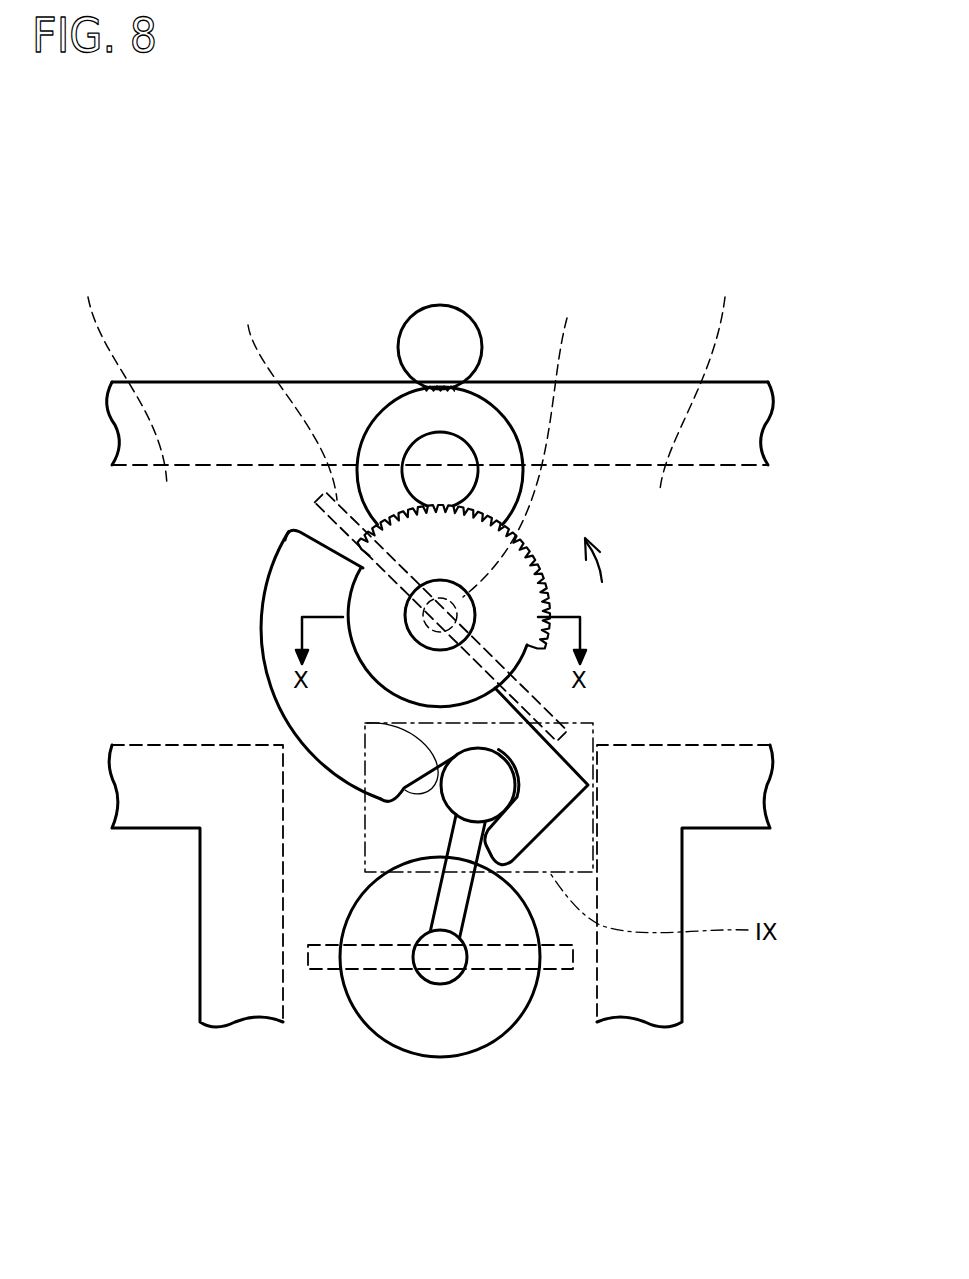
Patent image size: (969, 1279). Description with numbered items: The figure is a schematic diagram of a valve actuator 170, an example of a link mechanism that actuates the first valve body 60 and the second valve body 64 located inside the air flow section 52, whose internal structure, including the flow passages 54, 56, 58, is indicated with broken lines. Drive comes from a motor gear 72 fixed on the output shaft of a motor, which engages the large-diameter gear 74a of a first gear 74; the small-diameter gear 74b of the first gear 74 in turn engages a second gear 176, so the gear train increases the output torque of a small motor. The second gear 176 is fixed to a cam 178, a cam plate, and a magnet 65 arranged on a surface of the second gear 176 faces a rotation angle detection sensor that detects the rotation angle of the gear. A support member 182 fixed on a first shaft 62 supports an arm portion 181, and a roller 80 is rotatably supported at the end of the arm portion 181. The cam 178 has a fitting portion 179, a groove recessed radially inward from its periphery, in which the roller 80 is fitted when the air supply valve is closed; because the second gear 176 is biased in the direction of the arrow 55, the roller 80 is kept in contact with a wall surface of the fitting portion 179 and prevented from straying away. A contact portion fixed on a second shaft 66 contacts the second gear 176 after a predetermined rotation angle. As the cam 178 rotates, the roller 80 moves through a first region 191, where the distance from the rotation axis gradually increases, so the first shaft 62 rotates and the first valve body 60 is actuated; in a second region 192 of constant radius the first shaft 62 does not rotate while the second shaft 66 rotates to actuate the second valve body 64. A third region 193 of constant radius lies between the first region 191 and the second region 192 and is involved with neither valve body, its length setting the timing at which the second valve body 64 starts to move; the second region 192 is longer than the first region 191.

The valve actuator 170 is at (173, 273).
The air flow section 52 is at (735, 407).
The flow passage 54 is at (303, 983).
The arrow 55 is at (600, 563).
The flow passage 56 is at (121, 378).
The flow passage 58 is at (700, 380).
The first valve body 60 is at (552, 962).
The first shaft 62 is at (442, 975).
The second valve body 64 is at (283, 400).
The magnet 65 is at (427, 640).
The second shaft 66 is at (522, 445).
The motor gear 72 is at (448, 328).
The first gear 74 is at (393, 376).
The large-diameter gear 74a is at (405, 420).
The small-diameter gear 74b is at (420, 458).
The roller 80 is at (453, 793).
The second gear 176 is at (520, 568).
The cam 178 is at (250, 674).
The fitting portion 179 is at (557, 780).
The arm portion 181 is at (450, 885).
The support member 182 is at (368, 912).
The first region 191 is at (367, 722).
The second region 192 is at (267, 592).
The third region 193 is at (340, 782).